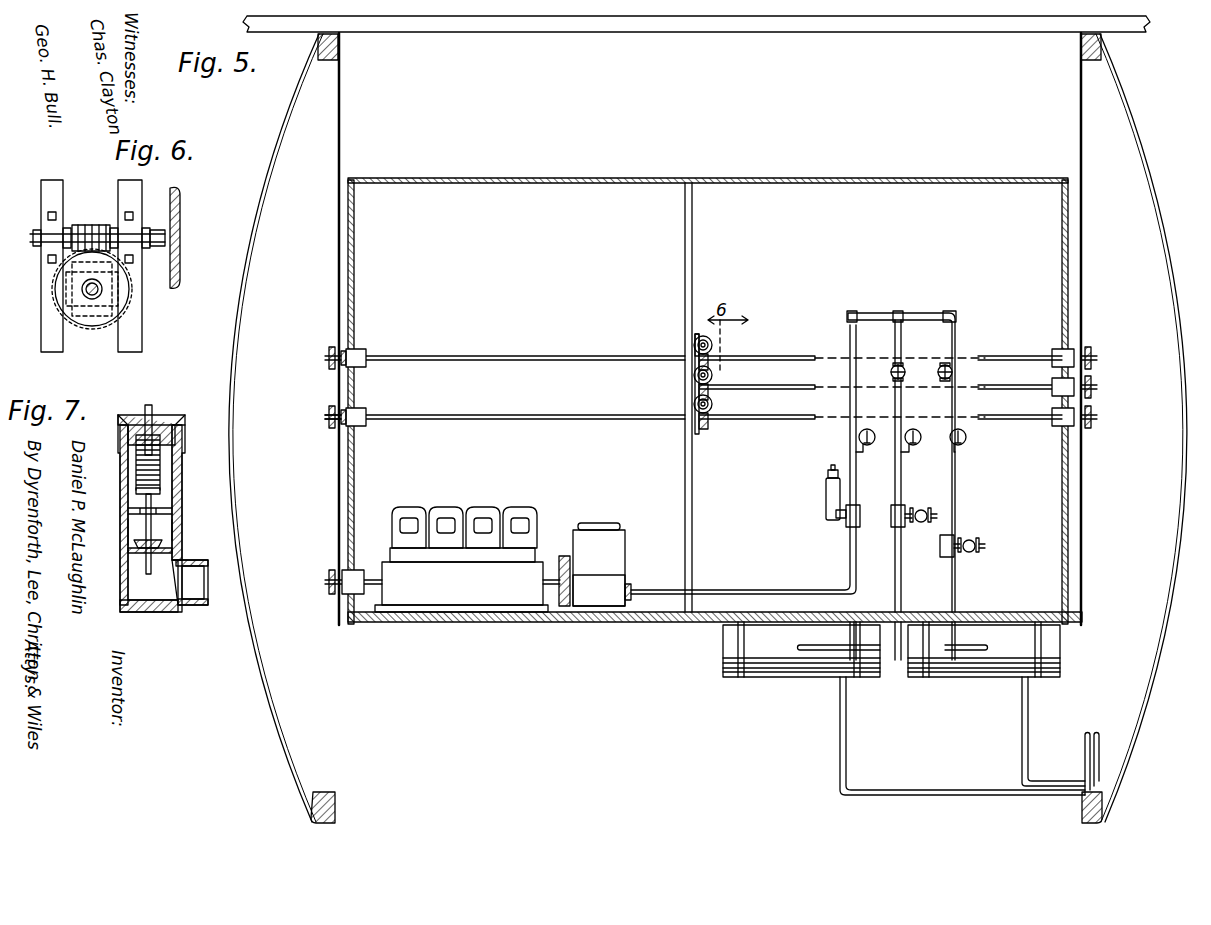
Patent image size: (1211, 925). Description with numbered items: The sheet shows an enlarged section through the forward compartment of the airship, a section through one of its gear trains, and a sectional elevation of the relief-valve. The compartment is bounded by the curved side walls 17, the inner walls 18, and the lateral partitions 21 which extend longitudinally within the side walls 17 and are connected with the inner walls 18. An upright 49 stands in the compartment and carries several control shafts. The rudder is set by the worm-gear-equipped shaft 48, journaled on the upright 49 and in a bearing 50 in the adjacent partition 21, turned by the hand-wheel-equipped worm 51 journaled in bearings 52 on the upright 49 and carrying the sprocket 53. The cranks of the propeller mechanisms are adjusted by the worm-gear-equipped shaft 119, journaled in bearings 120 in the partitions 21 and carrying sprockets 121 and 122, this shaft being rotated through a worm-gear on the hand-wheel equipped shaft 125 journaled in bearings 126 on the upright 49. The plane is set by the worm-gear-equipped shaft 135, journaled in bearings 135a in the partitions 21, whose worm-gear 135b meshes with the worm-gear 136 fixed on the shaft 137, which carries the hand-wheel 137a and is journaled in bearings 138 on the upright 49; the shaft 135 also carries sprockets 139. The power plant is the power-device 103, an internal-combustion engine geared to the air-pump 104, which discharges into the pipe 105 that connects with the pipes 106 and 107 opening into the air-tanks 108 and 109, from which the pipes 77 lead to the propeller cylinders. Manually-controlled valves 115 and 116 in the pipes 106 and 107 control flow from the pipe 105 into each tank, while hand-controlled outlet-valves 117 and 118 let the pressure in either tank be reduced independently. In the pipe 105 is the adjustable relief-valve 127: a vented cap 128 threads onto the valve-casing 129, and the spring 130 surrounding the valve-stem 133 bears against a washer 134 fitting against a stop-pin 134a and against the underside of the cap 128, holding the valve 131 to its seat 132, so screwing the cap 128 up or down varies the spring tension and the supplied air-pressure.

In FIG. 5, the side walls 17 is at (233, 523).
In FIG. 5, the inner walls 18 is at (708, 231).
In FIG. 5, the lateral partitions 21 is at (347, 260).
In FIG. 5, the worm-gear-equipped shaft 48 is at (768, 387).
In FIG. 5, the upright 49 is at (684, 462).
In FIG. 5, the bearing 50 is at (1056, 393).
In FIG. 5, the hand-wheel-equipped worm 51 is at (712, 374).
In FIG. 5, the bearings 52 is at (698, 373).
In FIG. 5, the sprocket 53 is at (1096, 382).
In FIG. 5, the pipes 77 is at (1097, 734).
In FIG. 5, the power-device 103 is at (436, 559).
In FIG. 5, the air-pump 104 is at (612, 548).
In FIG. 5, the pipe 105 is at (774, 589).
In FIG. 5, the pipe 106 is at (853, 460).
In FIG. 5, the pipe 107 is at (955, 468).
In FIG. 5, the air-tank 108 is at (800, 677).
In FIG. 5, the air-tank 109 is at (968, 677).
In FIG. 5, the manually-controlled valve 115 is at (902, 366).
In FIG. 5, the manually-controlled valve 116 is at (952, 366).
In FIG. 5, the hand-controlled outlet-valve 117 is at (925, 506).
In FIG. 5, the hand-controlled outlet-valve 118 is at (975, 540).
In FIG. 5, the worm-gear-equipped shaft 119 is at (772, 422).
In FIG. 5, the bearings 120 is at (360, 410).
In FIG. 5, the sprocket 121 is at (1096, 424).
In FIG. 5, the sprocket 122 is at (330, 423).
In FIG. 5, the hand-wheel equipped shaft 125 is at (700, 418).
In FIG. 5, the bearings 126 is at (698, 403).
In FIG. 5, the relief-valve 127 is at (826, 492).
In FIG. 7, the relief-valve 127 is at (128, 512).
In FIG. 7, the vented cap 128 is at (185, 430).
In FIG. 7, the valve-casing 129 is at (176, 514).
In FIG. 7, the spring 130 is at (136, 472).
In FIG. 7, the valve 131 is at (162, 540).
In FIG. 7, the seat 132 is at (128, 551).
In FIG. 7, the valve-stem 133 is at (145, 408).
In FIG. 7, the washer 134 is at (128, 525).
In FIG. 7, the stop-pin 134a is at (152, 498).
In FIG. 5, the worm-gear-equipped shaft 135 is at (604, 355).
In FIG. 6, the worm-gear-equipped shaft 135 is at (92, 300).
In FIG. 5, the bearings 135a is at (362, 349).
In FIG. 6, the bearings 135a is at (125, 300).
In FIG. 5, the worm-gear 135b is at (710, 360).
In FIG. 5, the worm-gear 136 is at (712, 344).
In FIG. 6, the worm-gear 136 is at (90, 225).
In FIG. 5, the shaft 137 is at (700, 334).
In FIG. 6, the shaft 137 is at (150, 250).
In FIG. 6, the hand-wheel 137a is at (176, 222).
In FIG. 5, the bearings 138 is at (696, 346).
In FIG. 5, the sprockets 139 is at (330, 350).